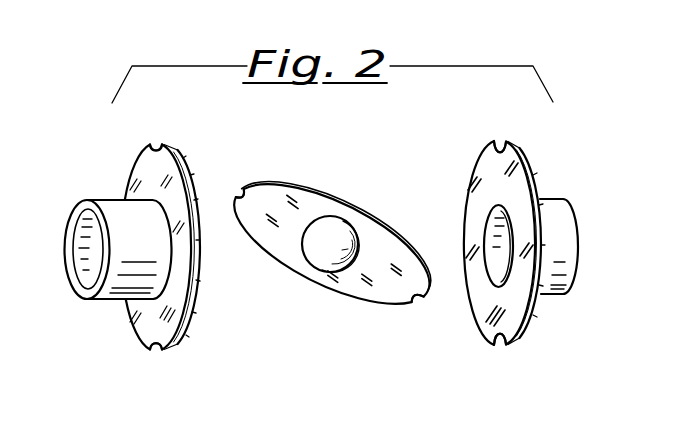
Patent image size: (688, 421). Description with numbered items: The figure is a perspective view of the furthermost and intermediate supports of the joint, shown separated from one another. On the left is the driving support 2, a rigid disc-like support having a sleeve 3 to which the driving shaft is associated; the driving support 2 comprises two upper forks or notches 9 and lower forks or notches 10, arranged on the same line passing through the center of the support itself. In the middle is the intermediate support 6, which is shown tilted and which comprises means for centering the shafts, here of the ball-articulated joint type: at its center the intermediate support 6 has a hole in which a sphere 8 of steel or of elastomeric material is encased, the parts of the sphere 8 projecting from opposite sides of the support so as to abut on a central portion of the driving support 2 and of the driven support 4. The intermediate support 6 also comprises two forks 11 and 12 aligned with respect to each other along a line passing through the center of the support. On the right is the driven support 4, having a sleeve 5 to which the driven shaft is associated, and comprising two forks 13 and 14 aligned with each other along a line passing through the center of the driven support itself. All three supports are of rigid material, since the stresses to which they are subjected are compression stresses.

The driving support 2 is at (128, 179).
The sleeve 3 is at (117, 293).
The driven support 4 is at (538, 172).
The sleeve 5 is at (567, 234).
The intermediate support 6 is at (310, 211).
The sphere 8 is at (318, 259).
The upper forks or notches 9 is at (154, 148).
The lower forks or notches 10 is at (154, 351).
The fork 11 is at (424, 295).
The fork 12 is at (238, 195).
The fork 13 is at (500, 142).
The fork 14 is at (500, 345).